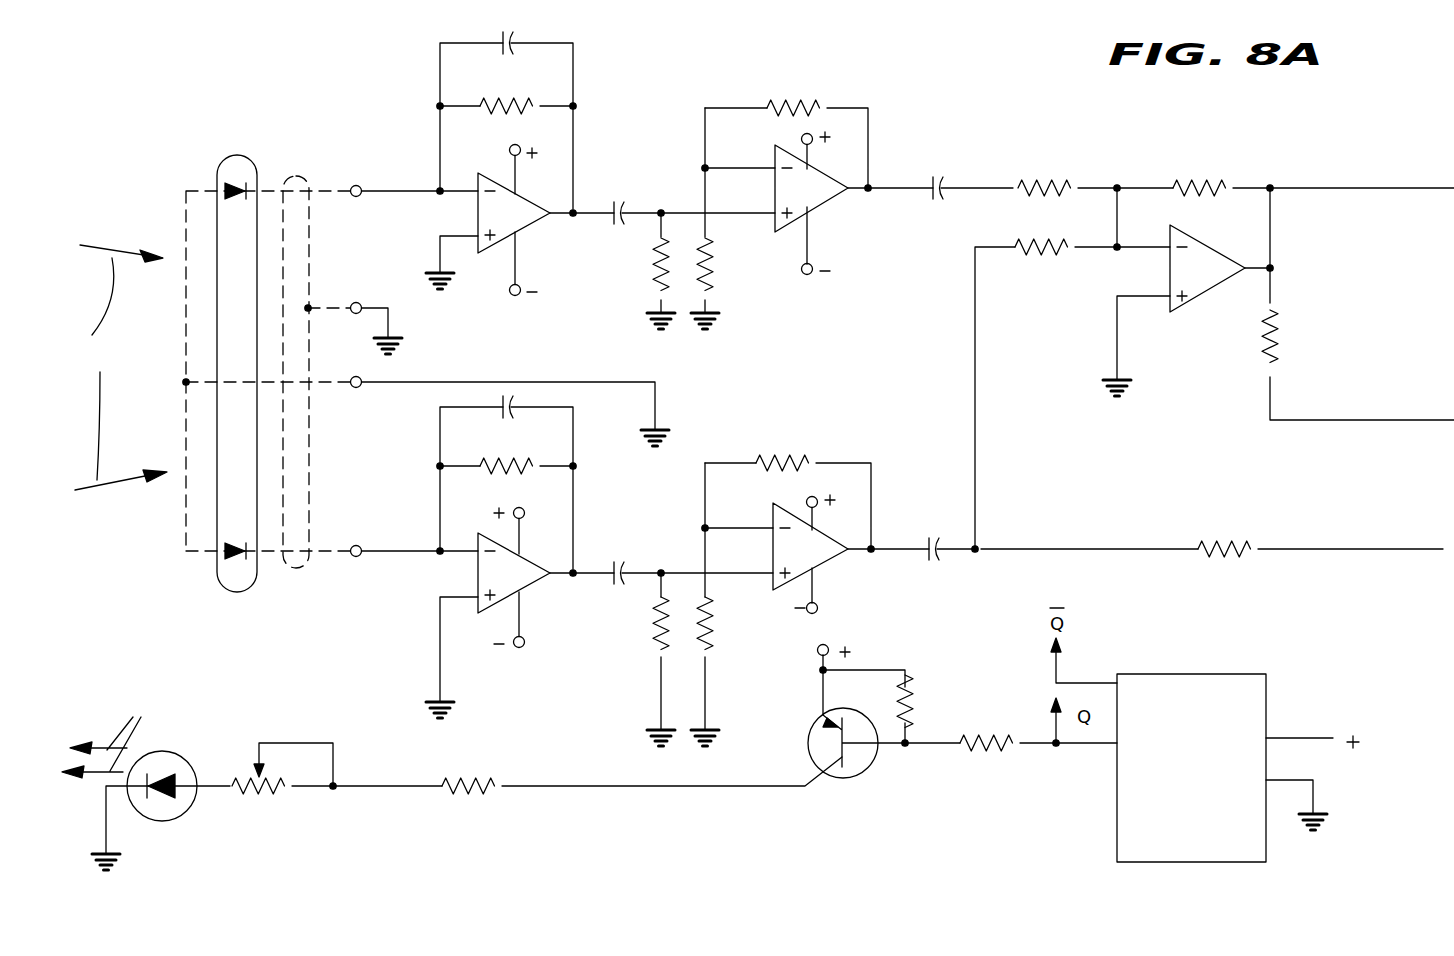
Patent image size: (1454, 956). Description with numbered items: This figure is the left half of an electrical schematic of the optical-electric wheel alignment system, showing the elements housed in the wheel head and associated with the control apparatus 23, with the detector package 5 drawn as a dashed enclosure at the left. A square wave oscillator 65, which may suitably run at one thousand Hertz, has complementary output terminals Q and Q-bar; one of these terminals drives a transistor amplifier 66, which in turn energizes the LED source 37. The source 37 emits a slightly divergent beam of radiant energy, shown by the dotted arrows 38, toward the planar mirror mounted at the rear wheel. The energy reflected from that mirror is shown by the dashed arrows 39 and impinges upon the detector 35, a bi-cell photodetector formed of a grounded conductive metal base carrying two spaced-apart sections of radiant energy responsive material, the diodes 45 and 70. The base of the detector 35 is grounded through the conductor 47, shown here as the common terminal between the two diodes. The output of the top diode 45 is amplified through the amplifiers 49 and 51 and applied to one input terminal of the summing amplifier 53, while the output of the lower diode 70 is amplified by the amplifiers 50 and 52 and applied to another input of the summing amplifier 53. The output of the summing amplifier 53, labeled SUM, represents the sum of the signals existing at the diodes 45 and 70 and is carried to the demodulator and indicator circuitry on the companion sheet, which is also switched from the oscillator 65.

The detector assembly 5 is at (266, 372).
The control apparatus 23 is at (1150, 508).
The detector 35 is at (205, 523).
The source 37 is at (185, 810).
The modulated beam of light 38 is at (104, 736).
The reflected beam of energy 39 is at (121, 367).
The diode 45 is at (238, 185).
The conductor 47 is at (324, 381).
The amplifier 49 is at (545, 185).
The amplifier 50 is at (548, 545).
The amplifier 51 is at (845, 160).
The amplifier 52 is at (838, 520).
The summing amplifier 53 is at (1208, 302).
The square wave oscillator 65 is at (1117, 840).
The transistor amplifier 66 is at (847, 800).
The diode 70 is at (236, 562).